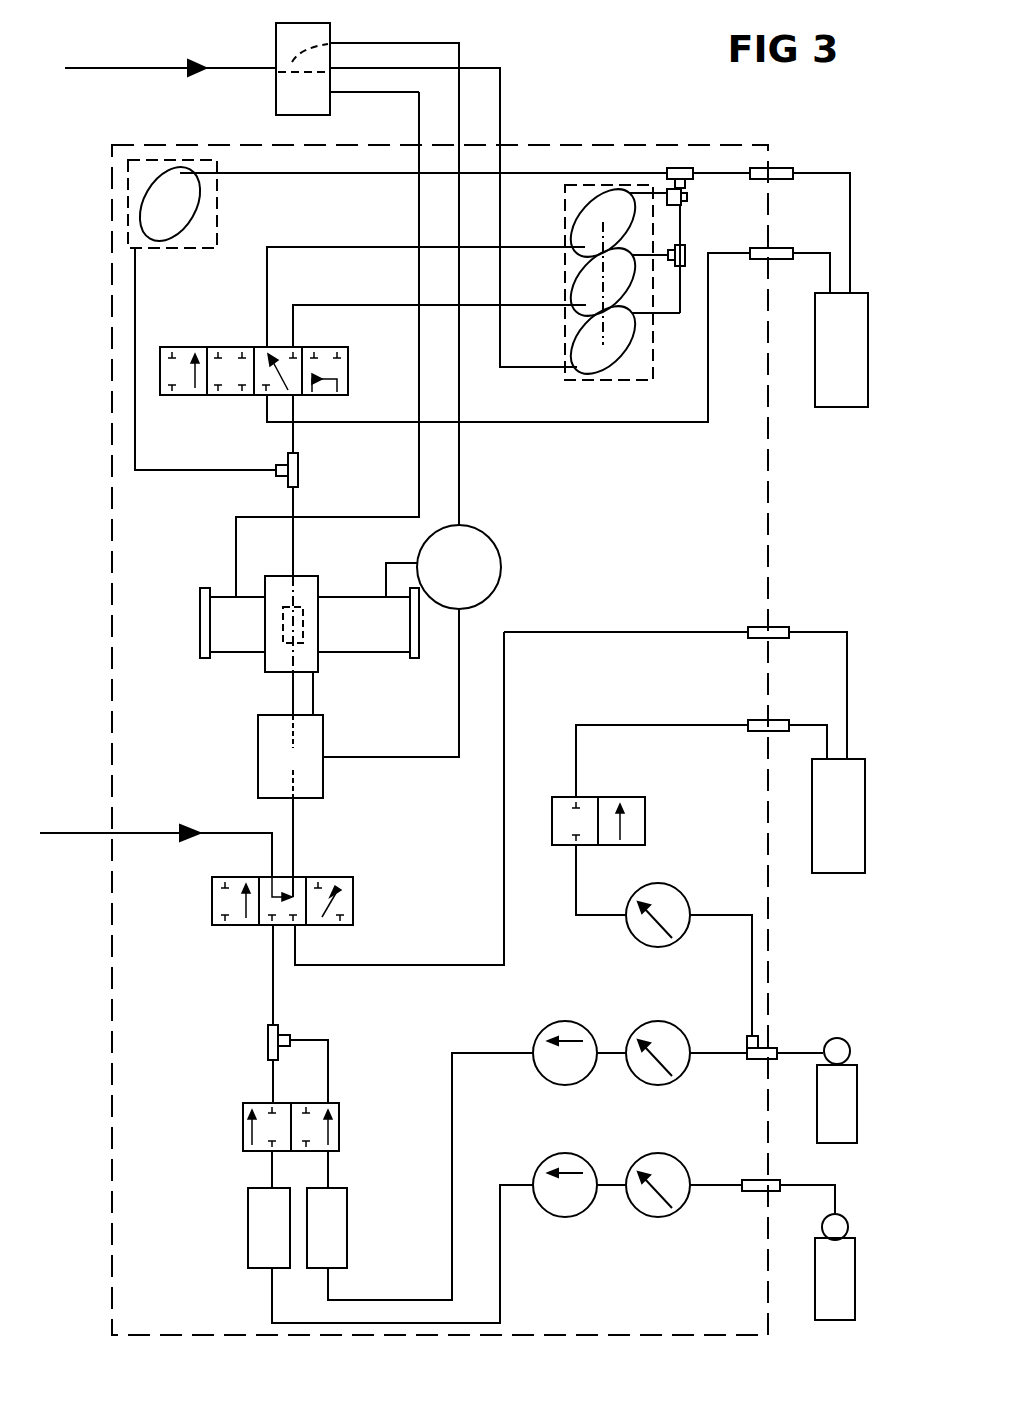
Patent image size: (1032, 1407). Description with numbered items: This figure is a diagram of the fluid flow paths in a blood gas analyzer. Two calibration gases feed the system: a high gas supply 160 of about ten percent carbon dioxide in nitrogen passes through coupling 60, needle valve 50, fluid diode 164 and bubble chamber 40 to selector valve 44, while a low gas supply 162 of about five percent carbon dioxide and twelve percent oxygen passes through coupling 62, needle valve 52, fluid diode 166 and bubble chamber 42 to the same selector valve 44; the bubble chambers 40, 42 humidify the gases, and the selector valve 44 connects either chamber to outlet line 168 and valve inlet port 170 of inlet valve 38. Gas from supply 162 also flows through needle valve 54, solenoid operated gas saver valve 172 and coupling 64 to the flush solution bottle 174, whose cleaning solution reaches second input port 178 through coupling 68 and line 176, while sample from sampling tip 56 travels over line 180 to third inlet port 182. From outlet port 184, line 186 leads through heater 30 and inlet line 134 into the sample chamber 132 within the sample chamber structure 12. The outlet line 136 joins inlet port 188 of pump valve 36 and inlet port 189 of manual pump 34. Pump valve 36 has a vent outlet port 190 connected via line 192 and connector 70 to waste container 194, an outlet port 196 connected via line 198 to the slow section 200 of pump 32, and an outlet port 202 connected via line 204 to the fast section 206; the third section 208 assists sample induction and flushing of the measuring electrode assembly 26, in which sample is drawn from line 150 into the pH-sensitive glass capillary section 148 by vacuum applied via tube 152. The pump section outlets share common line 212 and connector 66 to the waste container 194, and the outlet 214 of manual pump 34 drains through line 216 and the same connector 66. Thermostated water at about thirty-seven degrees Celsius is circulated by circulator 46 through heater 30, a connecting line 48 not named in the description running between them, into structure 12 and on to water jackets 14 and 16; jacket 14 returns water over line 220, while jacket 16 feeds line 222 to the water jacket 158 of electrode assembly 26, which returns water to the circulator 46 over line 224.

The sample chamber structure 12 is at (264, 665).
The water jacket 14 is at (218, 641).
The water jacket 16 is at (352, 646).
The measuring electrode assembly 26 is at (272, 42).
The heater 30 is at (258, 758).
The pump 32 is at (608, 386).
The manual pump 34 is at (218, 203).
The pump valve 36 is at (355, 366).
The inlet valve 38 is at (362, 888).
The bubble chamber 40 is at (248, 1222).
The bubble chamber 42 is at (347, 1226).
The selector valve 44 is at (342, 1104).
The circulator 46 is at (502, 563).
The control line 48 is at (382, 758).
The needle valve 50 is at (660, 1218).
The needle valve 52 is at (661, 1087).
The needle valve 54 is at (653, 947).
The sampling tip 56 is at (70, 812).
The coupling 60 is at (752, 1194).
The coupling 62 is at (779, 1040).
The coupling 64 is at (750, 730).
The connector 66 is at (795, 170).
The coupling 68 is at (781, 627).
The connector 70 is at (758, 260).
The sample chamber 132 is at (283, 615).
The inlet line 134 is at (295, 698).
The outlet line 136 is at (295, 548).
The capillary section 148 is at (332, 40).
The line 150 is at (184, 72).
The tube 152 is at (478, 68).
The water jacket 158 is at (276, 93).
The high gas supply 160 is at (852, 1240).
The low gas supply 162 is at (850, 1064).
The fluid diode 164 is at (549, 1155).
The fluid diode 166 is at (546, 1025).
The outlet line 168 is at (270, 1005).
The valve inlet port 170 is at (270, 928).
The gas saver valve 172 is at (646, 838).
The flush solution bottle 174 is at (818, 875).
The line 176 is at (602, 632).
The second input port 178 is at (298, 926).
The line 180 is at (157, 836).
The third inlet port 182 is at (271, 876).
The outlet port 184 is at (296, 876).
The line 186 is at (295, 830).
The inlet port 188 is at (295, 397).
The inlet port 189 is at (138, 250).
The vent outlet port 190 is at (265, 397).
The line 192 is at (404, 426).
The waste container 194 is at (835, 408).
The outlet port 196 is at (265, 345).
The line 198 is at (398, 246).
The slow section 200 is at (575, 225).
The outlet port 202 is at (300, 345).
The line 204 is at (392, 304).
The fast section 206 is at (578, 276).
The third section 208 is at (578, 343).
The common line 212 is at (684, 196).
The outlet 214 is at (218, 167).
The line 216 is at (562, 176).
The line 220 is at (398, 563).
The line 222 is at (419, 117).
The line 224 is at (462, 107).